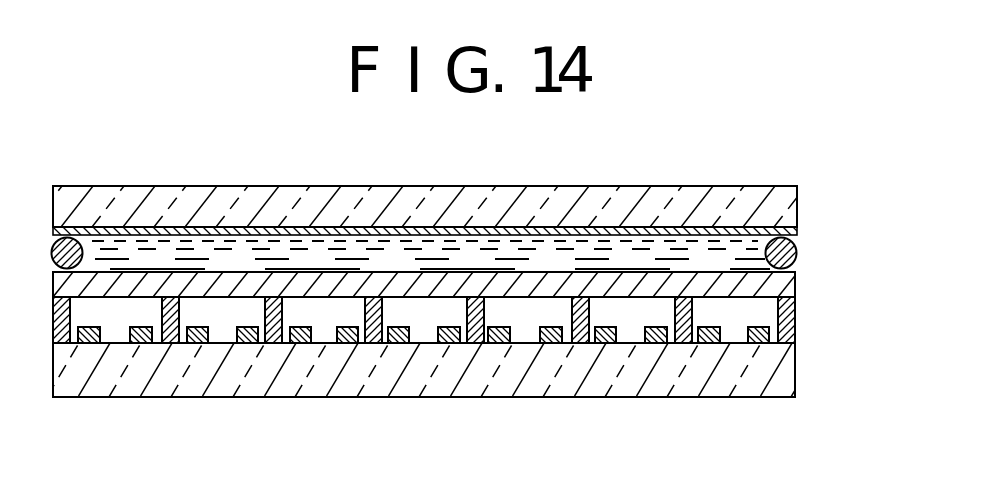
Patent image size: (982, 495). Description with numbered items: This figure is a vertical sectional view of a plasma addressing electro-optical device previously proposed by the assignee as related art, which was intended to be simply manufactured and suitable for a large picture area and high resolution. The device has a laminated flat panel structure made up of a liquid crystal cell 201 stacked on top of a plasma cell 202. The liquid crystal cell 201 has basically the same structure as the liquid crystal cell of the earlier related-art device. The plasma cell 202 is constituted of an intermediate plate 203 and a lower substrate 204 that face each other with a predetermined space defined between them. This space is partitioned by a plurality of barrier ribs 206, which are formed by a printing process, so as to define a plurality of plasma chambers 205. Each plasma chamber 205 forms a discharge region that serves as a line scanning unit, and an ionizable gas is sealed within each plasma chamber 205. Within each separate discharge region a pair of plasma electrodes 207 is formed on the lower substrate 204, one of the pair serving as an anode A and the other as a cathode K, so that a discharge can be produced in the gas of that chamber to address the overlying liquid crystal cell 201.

The liquid crystal cell 201 is at (817, 187).
The plasma cell 202 is at (468, 377).
The intermediate plate 203 is at (797, 288).
The lower substrate 204 is at (473, 372).
The plasma chamber 205 is at (738, 312).
The barrier rib 206 is at (168, 344).
The plasma electrode 207 is at (85, 344).
The anode A is at (300, 344).
The cathode K is at (345, 344).